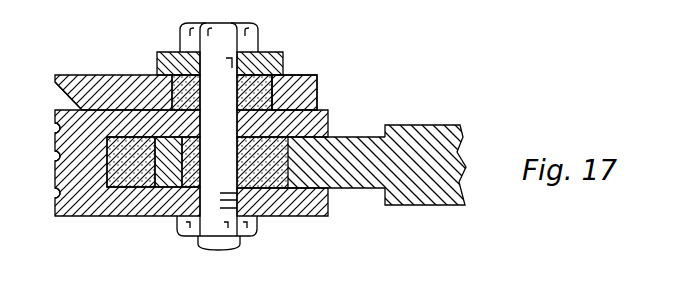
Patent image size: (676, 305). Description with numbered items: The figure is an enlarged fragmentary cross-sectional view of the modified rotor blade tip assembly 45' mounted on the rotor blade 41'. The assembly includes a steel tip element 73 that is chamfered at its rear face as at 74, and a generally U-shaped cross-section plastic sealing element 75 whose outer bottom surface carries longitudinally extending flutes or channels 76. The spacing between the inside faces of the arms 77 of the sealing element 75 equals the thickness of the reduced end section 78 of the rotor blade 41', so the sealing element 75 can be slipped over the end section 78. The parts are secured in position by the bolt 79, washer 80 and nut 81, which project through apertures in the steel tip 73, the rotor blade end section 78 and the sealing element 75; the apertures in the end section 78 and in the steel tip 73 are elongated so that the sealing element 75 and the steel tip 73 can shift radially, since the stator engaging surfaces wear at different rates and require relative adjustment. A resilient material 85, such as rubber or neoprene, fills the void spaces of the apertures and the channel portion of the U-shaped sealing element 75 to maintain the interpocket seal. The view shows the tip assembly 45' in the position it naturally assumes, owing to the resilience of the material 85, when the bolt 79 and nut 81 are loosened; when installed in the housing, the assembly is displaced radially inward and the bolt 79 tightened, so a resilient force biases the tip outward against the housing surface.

The steel tip element 73 is at (103, 86).
The chamfer 74 is at (66, 96).
The plastic sealing element 75 is at (78, 208).
The flutes or channels 76 is at (55, 193).
The arms of the U-shaped sealing element 77 is at (329, 121).
The reduced end section 78 is at (362, 178).
The bolt 79 is at (256, 36).
The washer 80 is at (284, 65).
The nut 81 is at (186, 232).
The resilient material 85 is at (175, 73).
The rotor blade 41' is at (425, 190).
The modified rotor blade tip assembly 45' is at (335, 76).